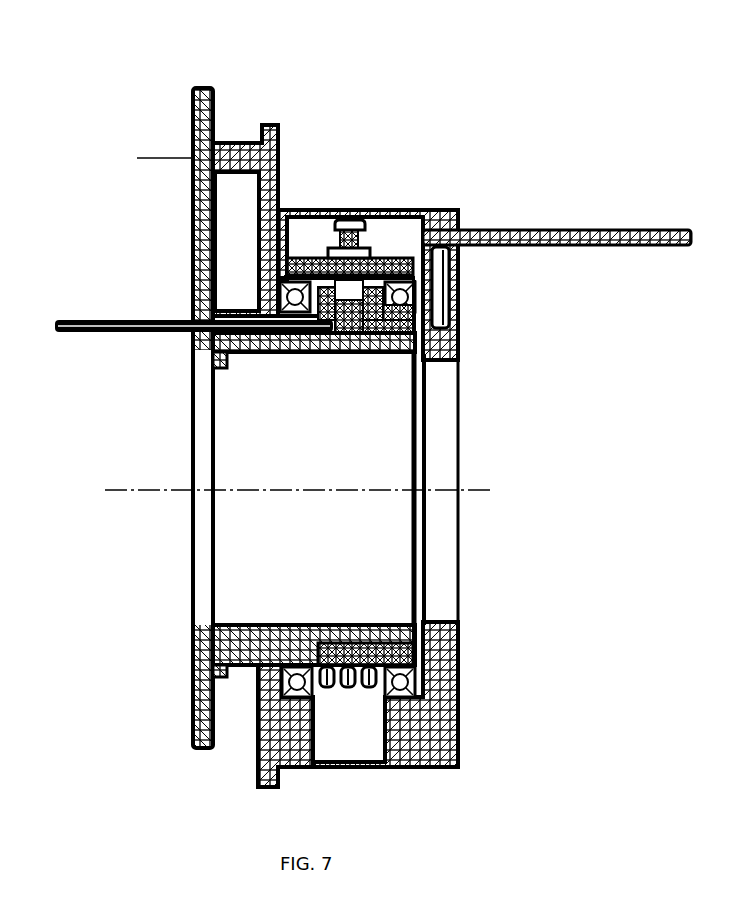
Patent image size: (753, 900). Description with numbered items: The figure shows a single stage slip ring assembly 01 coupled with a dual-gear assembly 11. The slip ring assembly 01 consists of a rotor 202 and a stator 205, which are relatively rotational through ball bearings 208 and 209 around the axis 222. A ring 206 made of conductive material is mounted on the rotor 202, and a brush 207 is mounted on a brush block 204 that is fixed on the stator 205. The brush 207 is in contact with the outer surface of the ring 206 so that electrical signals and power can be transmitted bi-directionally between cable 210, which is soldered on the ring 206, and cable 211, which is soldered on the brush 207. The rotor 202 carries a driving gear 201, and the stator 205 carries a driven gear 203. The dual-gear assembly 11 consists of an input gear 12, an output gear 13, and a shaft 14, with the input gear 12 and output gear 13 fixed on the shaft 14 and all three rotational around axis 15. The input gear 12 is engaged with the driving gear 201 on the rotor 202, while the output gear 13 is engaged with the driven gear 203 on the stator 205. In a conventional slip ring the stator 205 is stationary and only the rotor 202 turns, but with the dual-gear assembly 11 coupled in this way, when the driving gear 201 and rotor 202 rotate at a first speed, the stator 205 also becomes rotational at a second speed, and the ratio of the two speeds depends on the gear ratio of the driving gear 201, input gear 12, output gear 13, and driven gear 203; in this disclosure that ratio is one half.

The dual-gear assembly 11 is at (171, 382).
The input gear 12 is at (155, 398).
The output gear 13 is at (279, 181).
The shaft 14 is at (236, 141).
The axis 15 is at (166, 156).
The slip ring assembly 01 is at (484, 331).
The driving gear 201 is at (191, 231).
The rotor 202 is at (224, 347).
The driven gear 203 is at (273, 188).
The brush block 204 is at (460, 283).
The stator 205 is at (416, 370).
The ring 206 is at (353, 688).
The brush 207 is at (372, 210).
The ball bearing 208 is at (460, 737).
The ball bearing 209 is at (258, 757).
The cable 210 is at (72, 316).
The cable 211 is at (593, 228).
The axis 222 is at (490, 490).